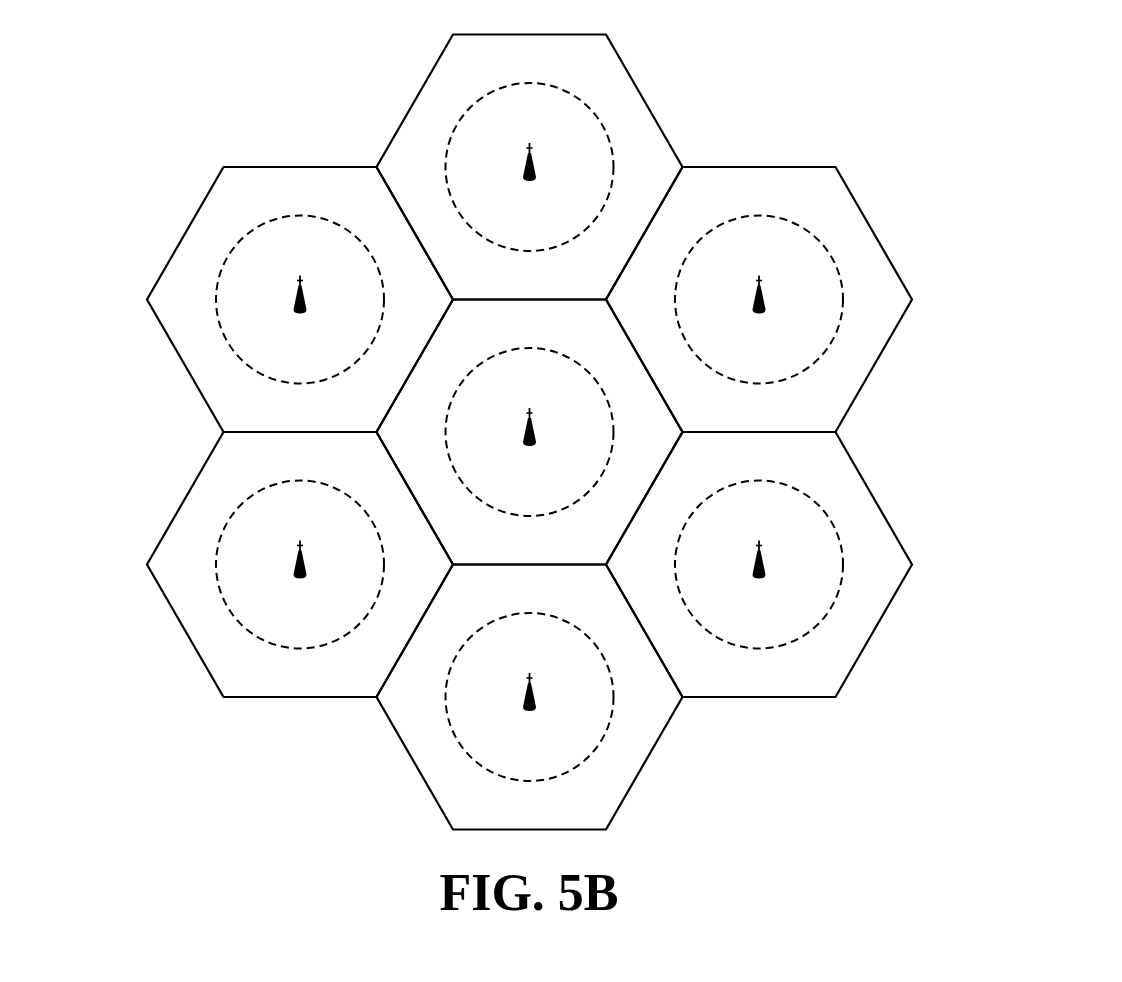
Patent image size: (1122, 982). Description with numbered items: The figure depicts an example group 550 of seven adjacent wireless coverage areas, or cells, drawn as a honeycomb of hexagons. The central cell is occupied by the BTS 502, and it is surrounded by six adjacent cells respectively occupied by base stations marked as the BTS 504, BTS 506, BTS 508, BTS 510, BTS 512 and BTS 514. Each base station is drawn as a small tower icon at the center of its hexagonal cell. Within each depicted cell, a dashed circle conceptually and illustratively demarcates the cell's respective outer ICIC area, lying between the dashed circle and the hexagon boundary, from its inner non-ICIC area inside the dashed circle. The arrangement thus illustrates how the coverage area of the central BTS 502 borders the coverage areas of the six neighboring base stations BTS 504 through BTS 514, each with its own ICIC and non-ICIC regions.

The BTS 502 is at (514, 469).
The BTS 504 is at (284, 336).
The BTS 506 is at (514, 204).
The BTS 508 is at (744, 336).
The BTS 510 is at (744, 602).
The BTS 512 is at (514, 734).
The BTS 514 is at (284, 602).
The cellular network layout 550 is at (1020, 99).